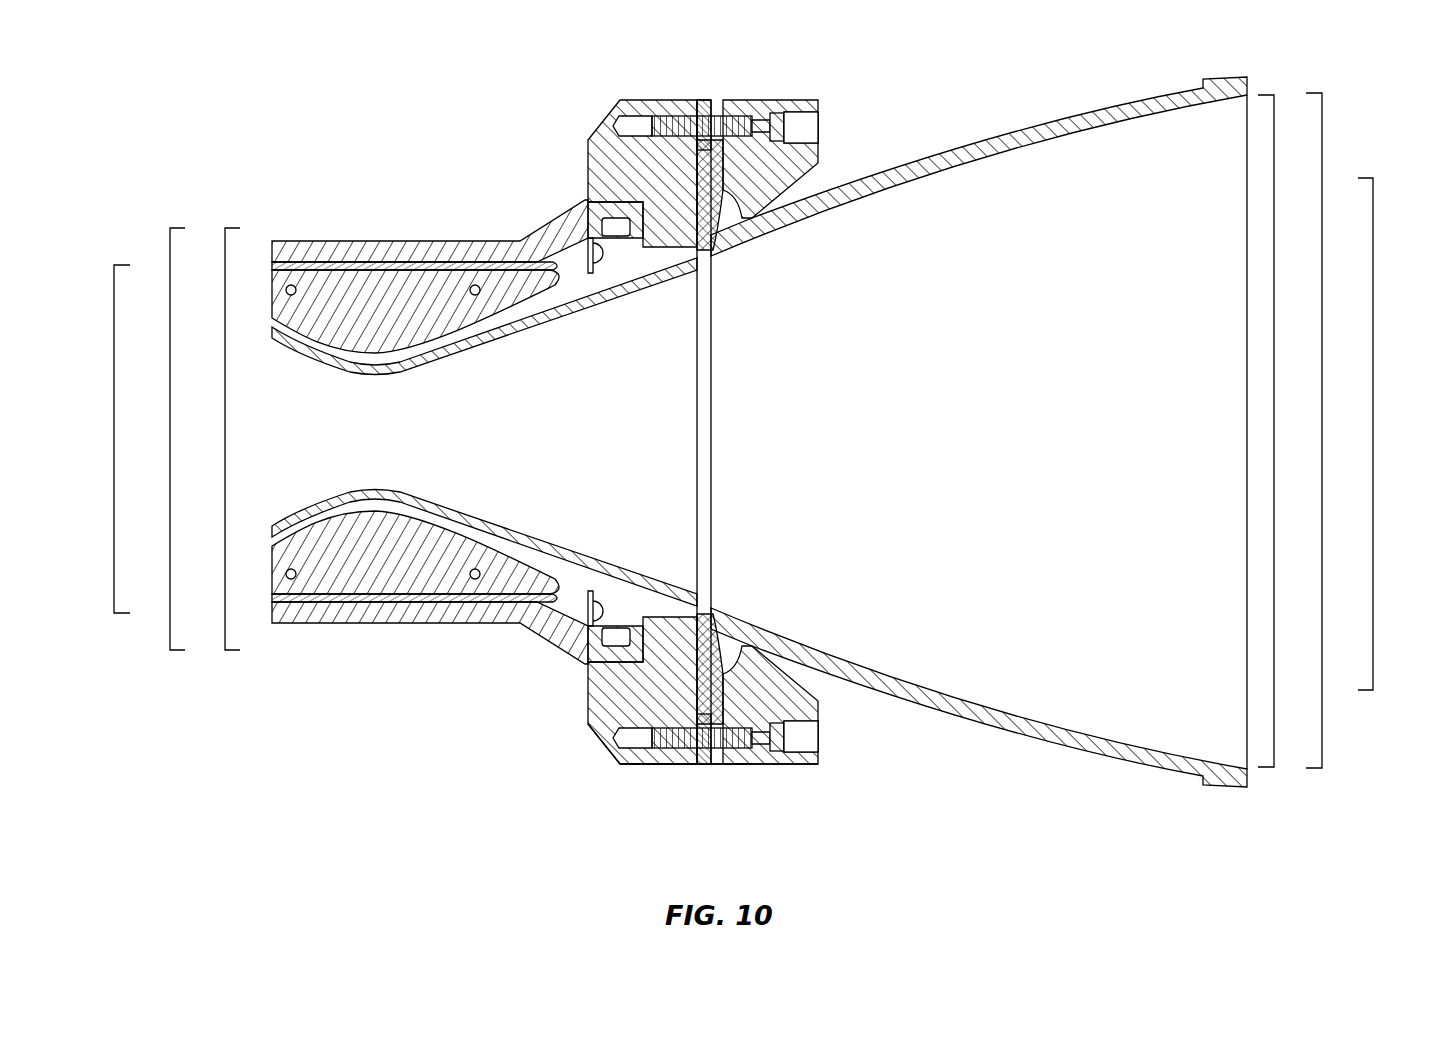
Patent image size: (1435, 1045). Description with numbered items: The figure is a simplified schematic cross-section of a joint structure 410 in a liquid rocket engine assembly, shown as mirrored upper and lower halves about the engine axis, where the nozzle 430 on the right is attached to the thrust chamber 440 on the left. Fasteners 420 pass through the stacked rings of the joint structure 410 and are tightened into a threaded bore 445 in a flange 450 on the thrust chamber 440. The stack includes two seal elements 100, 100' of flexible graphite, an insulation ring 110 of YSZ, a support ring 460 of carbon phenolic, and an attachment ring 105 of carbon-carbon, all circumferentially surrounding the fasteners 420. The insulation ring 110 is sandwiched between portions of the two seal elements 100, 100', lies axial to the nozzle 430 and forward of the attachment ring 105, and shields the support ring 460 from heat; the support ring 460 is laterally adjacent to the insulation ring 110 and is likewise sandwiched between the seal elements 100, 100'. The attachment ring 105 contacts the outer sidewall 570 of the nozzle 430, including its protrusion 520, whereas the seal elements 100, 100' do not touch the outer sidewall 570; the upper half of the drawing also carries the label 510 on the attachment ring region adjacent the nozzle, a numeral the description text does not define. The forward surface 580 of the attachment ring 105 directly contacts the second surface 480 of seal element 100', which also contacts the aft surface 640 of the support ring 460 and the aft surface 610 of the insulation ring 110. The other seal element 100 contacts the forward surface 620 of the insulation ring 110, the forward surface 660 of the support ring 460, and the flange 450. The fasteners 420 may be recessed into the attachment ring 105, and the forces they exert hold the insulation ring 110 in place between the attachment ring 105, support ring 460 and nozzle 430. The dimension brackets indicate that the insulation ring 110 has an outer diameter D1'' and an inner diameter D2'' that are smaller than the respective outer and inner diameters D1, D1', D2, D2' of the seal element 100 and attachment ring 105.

The seal element 100 is at (660, 800).
The seal element 100' is at (754, 803).
The attachment ring 105 is at (820, 768).
The insulation ring 110 is at (720, 612).
The joint structure 410 is at (799, 793).
The fasteners 420 is at (788, 740).
The nozzle 430 is at (1060, 752).
The thrust chamber 440 is at (432, 628).
The threaded bore 445 is at (624, 776).
The flange 450 is at (605, 700).
The support ring 460 is at (707, 764).
The second surface 480 is at (722, 98).
The inlet flange 510 is at (815, 170).
The protrusion 520 is at (728, 170).
The outer sidewall 570 is at (1021, 127).
The forward surface 580 is at (683, 98).
The aft surface 610 is at (597, 160).
The forward surface 620 is at (590, 190).
The aft surface 640 is at (612, 127).
The forward surface 660 is at (593, 722).
The outer diameter D1 is at (1283, 431).
The outer diameter D1' is at (1335, 430).
The outer diameter D1'' is at (1390, 434).
The inner diameter D2 is at (243, 439).
The inner diameter D2' is at (191, 439).
The inner diameter D2'' is at (138, 439).